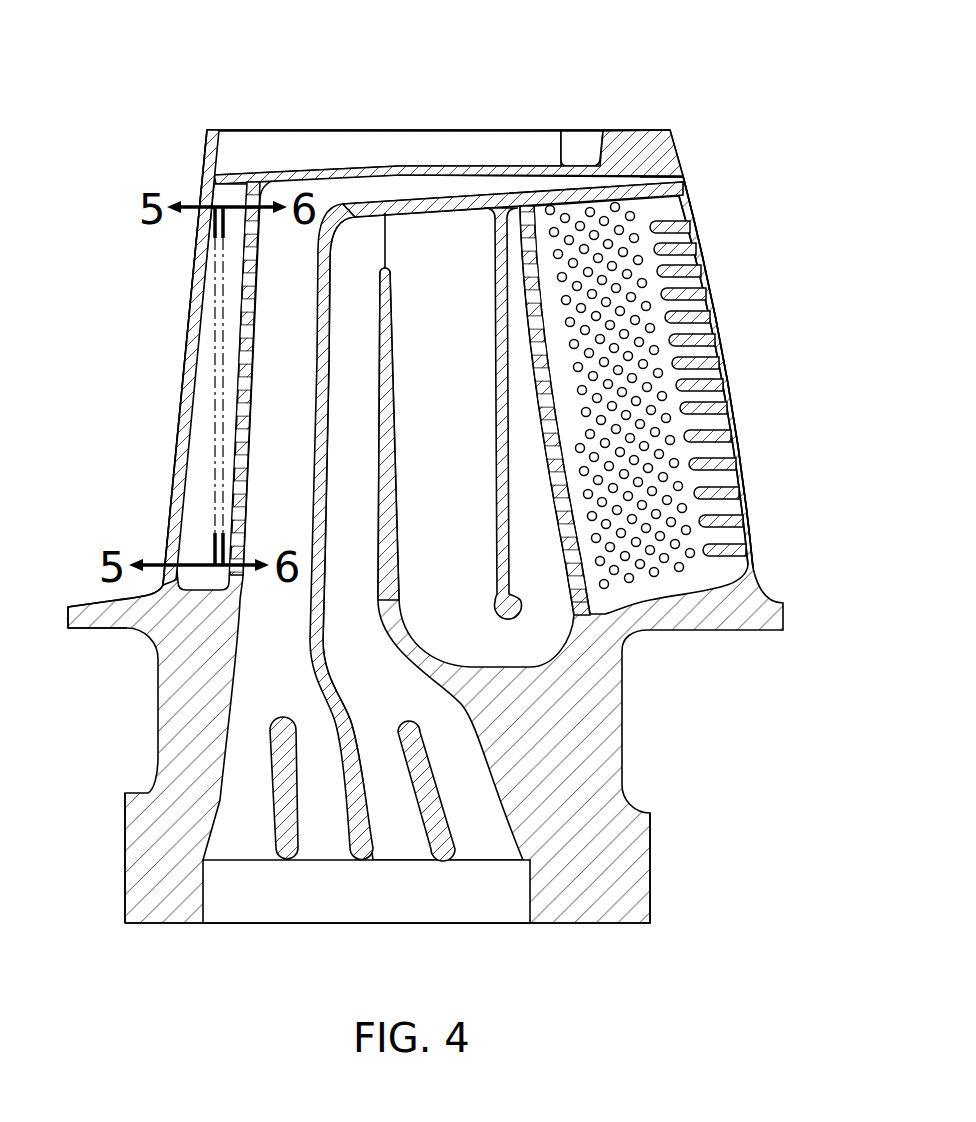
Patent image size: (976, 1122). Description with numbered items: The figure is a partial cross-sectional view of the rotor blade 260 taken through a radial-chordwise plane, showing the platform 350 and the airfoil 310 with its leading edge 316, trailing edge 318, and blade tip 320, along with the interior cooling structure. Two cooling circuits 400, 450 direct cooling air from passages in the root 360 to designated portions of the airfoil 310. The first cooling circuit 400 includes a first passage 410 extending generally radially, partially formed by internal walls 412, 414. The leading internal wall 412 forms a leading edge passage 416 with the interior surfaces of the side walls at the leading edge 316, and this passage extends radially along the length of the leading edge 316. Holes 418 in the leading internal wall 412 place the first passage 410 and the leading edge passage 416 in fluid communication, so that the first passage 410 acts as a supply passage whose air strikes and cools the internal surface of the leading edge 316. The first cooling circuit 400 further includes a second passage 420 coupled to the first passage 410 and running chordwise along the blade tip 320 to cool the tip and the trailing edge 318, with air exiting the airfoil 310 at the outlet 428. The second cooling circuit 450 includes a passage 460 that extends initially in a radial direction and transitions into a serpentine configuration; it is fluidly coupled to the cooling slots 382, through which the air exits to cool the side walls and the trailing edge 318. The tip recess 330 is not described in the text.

The rotor blade 260 is at (692, 105).
The airfoil 310 is at (760, 491).
The leading edge 316 is at (172, 477).
The trailing edge 318 is at (722, 330).
The blade tip 320 is at (246, 127).
The tip recess 330 is at (560, 127).
The platform 350 is at (68, 605).
The root 360 is at (158, 923).
The cooling slots 382 is at (725, 397).
The first cooling circuit 400 is at (280, 344).
The first passage 410 is at (248, 622).
The leading internal wall 412 is at (257, 235).
The internal wall 414 is at (318, 283).
The leading edge passage 416 is at (207, 285).
The holes 418 is at (238, 451).
The second passage 420 is at (333, 193).
The outlet 428 is at (677, 180).
The second cooling circuit 450 is at (337, 399).
The passage 460 is at (410, 216).